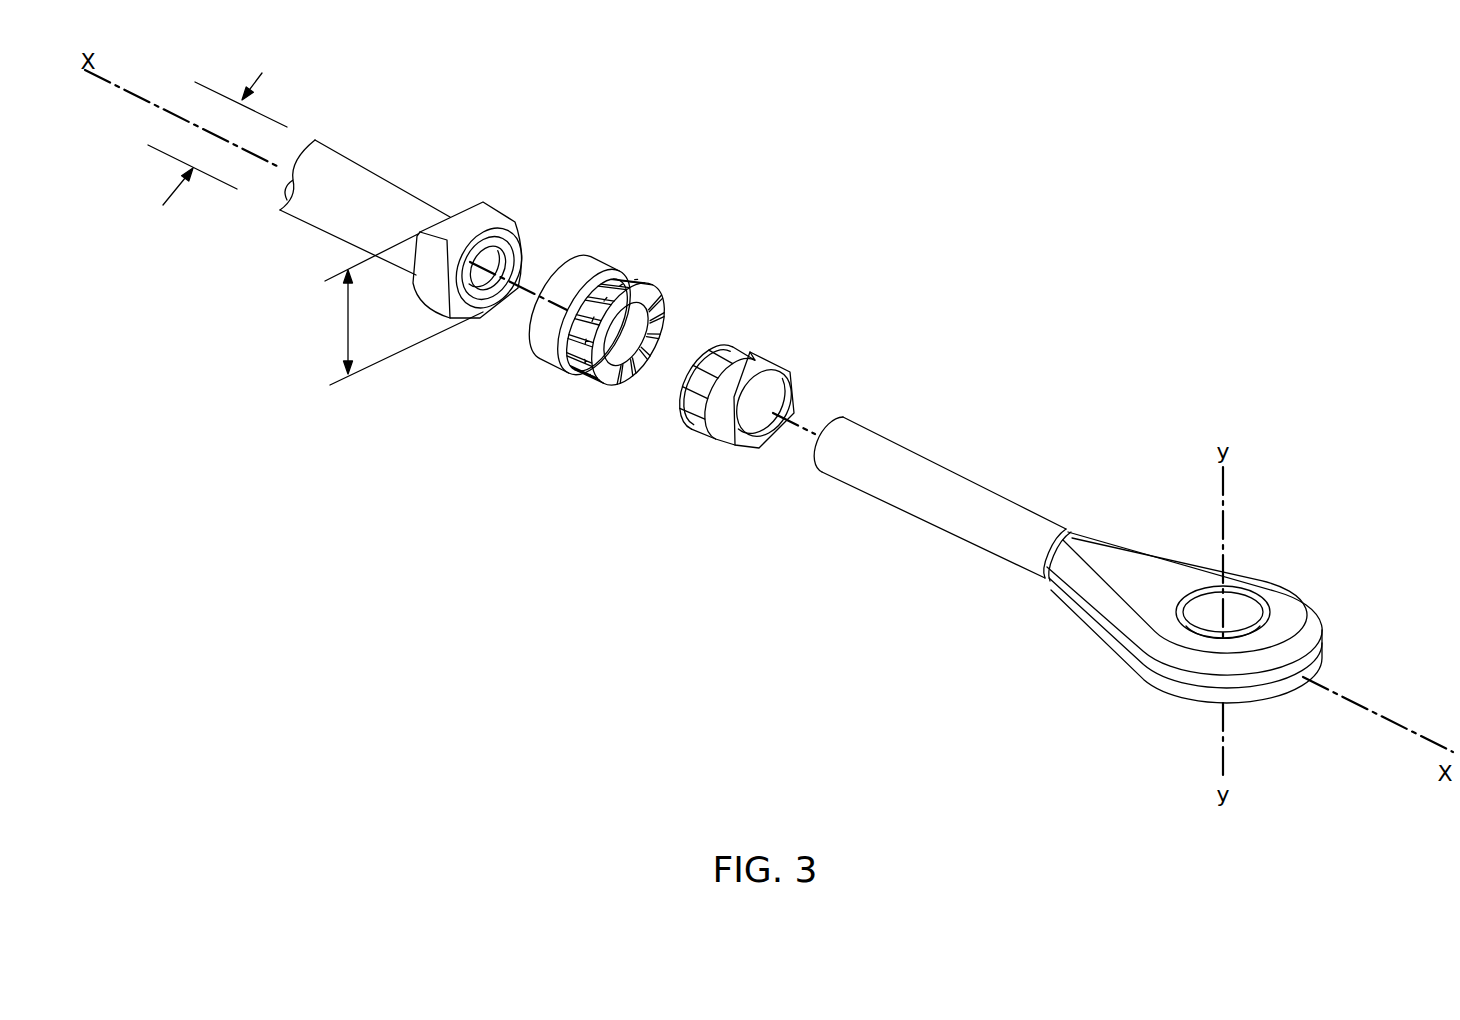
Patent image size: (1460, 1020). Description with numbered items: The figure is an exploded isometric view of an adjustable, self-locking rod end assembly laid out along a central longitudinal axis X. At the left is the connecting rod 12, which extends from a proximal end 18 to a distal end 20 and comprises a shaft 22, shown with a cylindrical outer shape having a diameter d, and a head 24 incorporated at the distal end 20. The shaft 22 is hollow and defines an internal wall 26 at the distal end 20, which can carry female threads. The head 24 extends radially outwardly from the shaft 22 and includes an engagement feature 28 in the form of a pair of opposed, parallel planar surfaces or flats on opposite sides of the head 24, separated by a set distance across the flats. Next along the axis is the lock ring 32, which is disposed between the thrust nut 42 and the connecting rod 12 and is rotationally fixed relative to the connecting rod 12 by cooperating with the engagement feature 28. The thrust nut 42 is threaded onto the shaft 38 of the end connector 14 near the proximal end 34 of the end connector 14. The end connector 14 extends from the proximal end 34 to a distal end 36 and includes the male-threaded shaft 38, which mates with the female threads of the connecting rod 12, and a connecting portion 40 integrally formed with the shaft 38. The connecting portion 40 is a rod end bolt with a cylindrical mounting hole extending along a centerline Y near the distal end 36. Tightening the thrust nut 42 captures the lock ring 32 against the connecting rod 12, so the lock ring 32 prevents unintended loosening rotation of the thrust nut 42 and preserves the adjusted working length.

The connecting rod 12 is at (393, 279).
The end connector 14 is at (1063, 591).
The proximal end 18 is at (166, 134).
The distal end 20 is at (428, 306).
The shaft 22 is at (313, 207).
The head 24 is at (609, 293).
The internal wall 26 is at (513, 282).
The engagement feature 28 is at (473, 218).
The lock ring 32 is at (626, 250).
The proximal end 34 is at (938, 530).
The distal end 36 is at (1184, 615).
The shaft 38 is at (986, 576).
The connecting portion 40 is at (1158, 524).
The thrust nut 42 is at (729, 450).